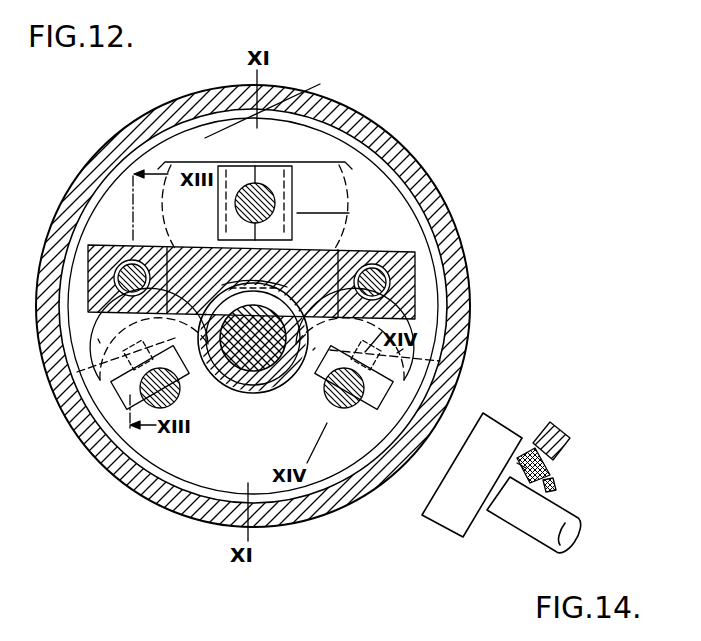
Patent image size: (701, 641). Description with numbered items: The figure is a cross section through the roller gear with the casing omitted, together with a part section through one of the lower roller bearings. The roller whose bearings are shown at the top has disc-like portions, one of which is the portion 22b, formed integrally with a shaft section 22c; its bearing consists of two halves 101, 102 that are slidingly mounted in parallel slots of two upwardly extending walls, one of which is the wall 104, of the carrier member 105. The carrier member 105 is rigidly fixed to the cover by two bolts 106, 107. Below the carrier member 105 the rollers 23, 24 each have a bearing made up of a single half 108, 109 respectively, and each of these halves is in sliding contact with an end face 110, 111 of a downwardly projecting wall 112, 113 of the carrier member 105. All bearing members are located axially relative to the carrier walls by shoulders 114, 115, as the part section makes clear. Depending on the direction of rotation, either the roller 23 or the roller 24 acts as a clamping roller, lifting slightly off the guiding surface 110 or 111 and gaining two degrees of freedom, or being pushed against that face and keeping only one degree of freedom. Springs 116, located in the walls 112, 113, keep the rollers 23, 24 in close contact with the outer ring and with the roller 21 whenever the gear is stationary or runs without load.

In FIG. 12, the roller 21 is at (230, 332).
In FIG. 12, the disc-like portion 22b is at (310, 152).
In FIG. 12, the shaft section 22c is at (343, 214).
In FIG. 12, the roller 23 is at (107, 424).
In FIG. 12, the roller 24 is at (380, 444).
In FIG. 14, the roller 24 is at (493, 435).
In FIG. 12, the bearing half 101 is at (300, 187).
In FIG. 12, the bearing half 102 is at (238, 170).
In FIG. 12, the upwardly extending wall 104 is at (302, 170).
In FIG. 12, the carrier member 105 is at (103, 246).
In FIG. 12, the bolt 106 is at (392, 270).
In FIG. 12, the bolt 107 is at (115, 272).
In FIG. 12, the bearing half 108 is at (125, 410).
In FIG. 12, the bearing half 109 is at (378, 392).
In FIG. 14, the bearing half 109 is at (520, 493).
In FIG. 12, the end face 110 is at (188, 365).
In FIG. 12, the end face 111 is at (313, 350).
In FIG. 12, the downwardly projecting wall 112 is at (100, 343).
In FIG. 12, the downwardly projecting wall 113 is at (397, 353).
In FIG. 14, the downwardly projecting wall 113 is at (558, 442).
In FIG. 14, the shoulder 114 is at (517, 468).
In FIG. 14, the shoulder 115 is at (553, 487).
In FIG. 12, the spring 116 is at (77, 373).
In FIG. 14, the spring 116 is at (538, 452).